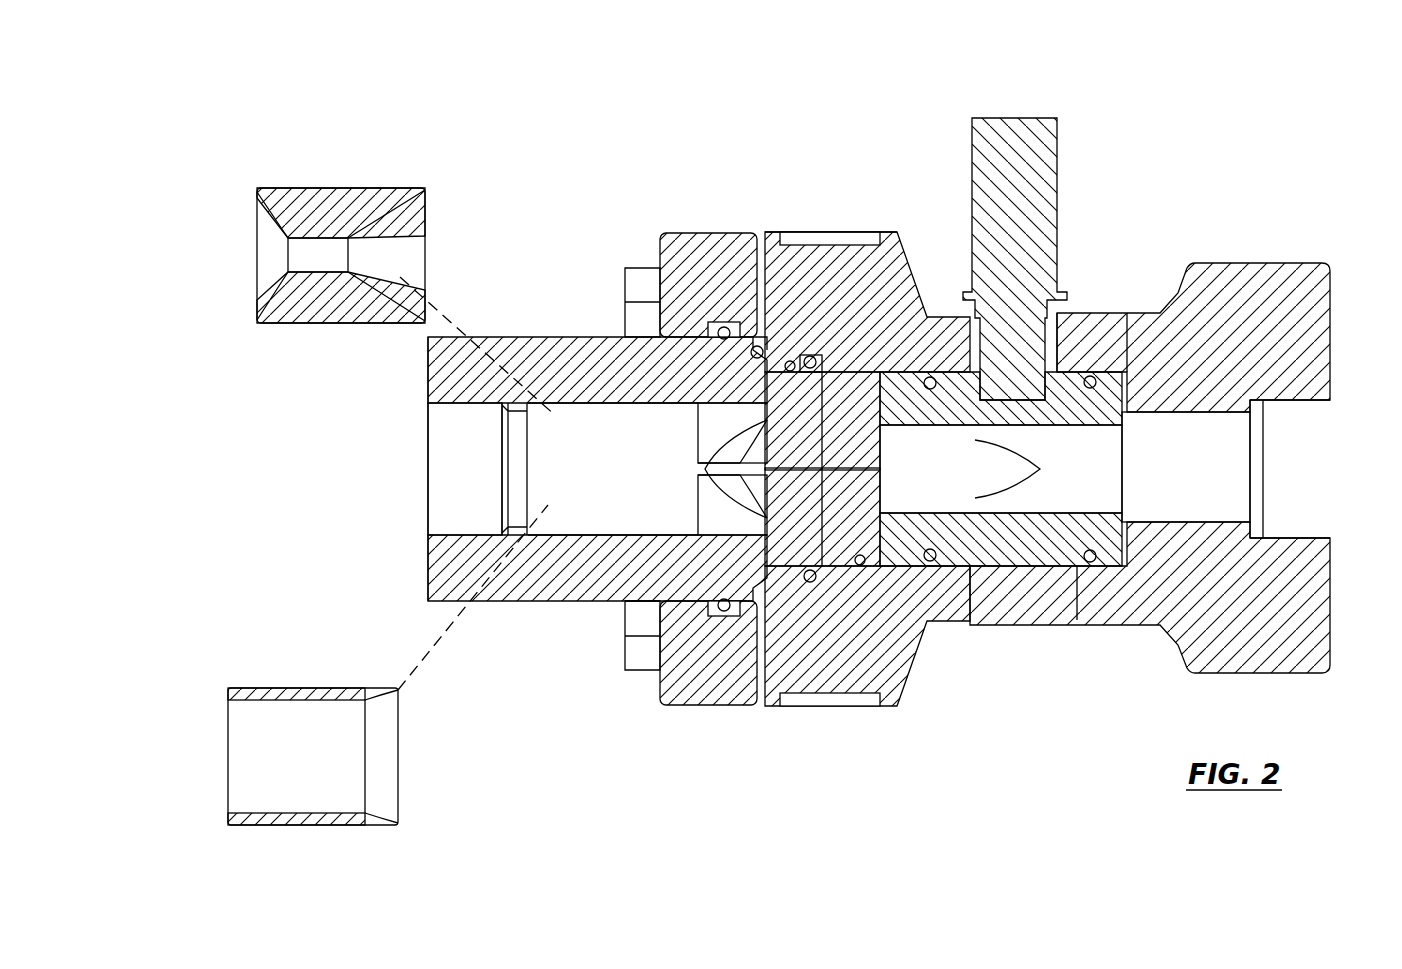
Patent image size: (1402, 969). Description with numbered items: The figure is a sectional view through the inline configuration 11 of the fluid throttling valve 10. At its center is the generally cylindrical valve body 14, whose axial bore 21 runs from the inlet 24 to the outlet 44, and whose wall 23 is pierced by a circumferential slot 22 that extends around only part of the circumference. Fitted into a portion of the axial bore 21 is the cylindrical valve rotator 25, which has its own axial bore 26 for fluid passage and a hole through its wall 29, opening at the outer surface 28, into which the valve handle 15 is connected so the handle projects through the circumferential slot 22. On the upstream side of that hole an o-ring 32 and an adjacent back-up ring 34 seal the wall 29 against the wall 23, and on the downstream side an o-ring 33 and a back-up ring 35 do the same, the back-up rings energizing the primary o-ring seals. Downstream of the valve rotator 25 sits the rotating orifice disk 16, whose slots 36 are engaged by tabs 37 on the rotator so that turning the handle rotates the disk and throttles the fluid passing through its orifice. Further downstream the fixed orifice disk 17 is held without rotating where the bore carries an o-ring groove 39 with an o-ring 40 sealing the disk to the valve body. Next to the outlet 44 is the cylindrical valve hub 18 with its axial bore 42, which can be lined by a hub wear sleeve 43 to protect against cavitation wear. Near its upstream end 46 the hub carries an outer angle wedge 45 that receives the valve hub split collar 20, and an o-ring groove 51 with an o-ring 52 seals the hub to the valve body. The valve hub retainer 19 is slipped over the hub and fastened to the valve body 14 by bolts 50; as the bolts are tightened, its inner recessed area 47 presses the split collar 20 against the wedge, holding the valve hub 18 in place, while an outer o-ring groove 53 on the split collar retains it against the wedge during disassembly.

The fluid throttling valve 10 is at (488, 127).
The inline configuration 11 is at (1240, 256).
The valve body 14 is at (1305, 265).
The valve handle 15 is at (1065, 210).
The rotating orifice disk 16 is at (850, 365).
The fixed orifice disk 17 is at (790, 361).
The valve hub 18 is at (517, 605).
The valve hub retainer 19 is at (657, 703).
The valve hub split collar 20 is at (645, 290).
The axial bore 21 is at (1186, 467).
The circumferential slot 22 is at (1062, 318).
The wall 23 is at (593, 407).
The inlet 24 is at (1330, 458).
The valve rotator 25 is at (902, 562).
The axial bore 26 is at (1001, 469).
The outer surface 28 is at (903, 365).
The wall 29 is at (1003, 542).
The o-ring 32 is at (1093, 562).
The o-ring 33 is at (930, 561).
The back-up ring 34 is at (1077, 622).
The back-up ring 35 is at (937, 566).
The slots 36 is at (810, 582).
The tabs 37 is at (860, 565).
The o-ring groove 39 is at (816, 355).
The o-ring 40 is at (808, 356).
The axial bore 42 is at (465, 469).
The hub wear sleeve 43 is at (325, 186).
The outlet 44 is at (750, 472).
The angle wedge 45 is at (657, 604).
The upstream end 46 is at (760, 422).
The recessed area 47 is at (728, 613).
The bolts 50 is at (622, 668).
The o-ring groove 51 is at (724, 327).
The o-ring 52 is at (757, 346).
The o-ring groove 53 is at (707, 348).